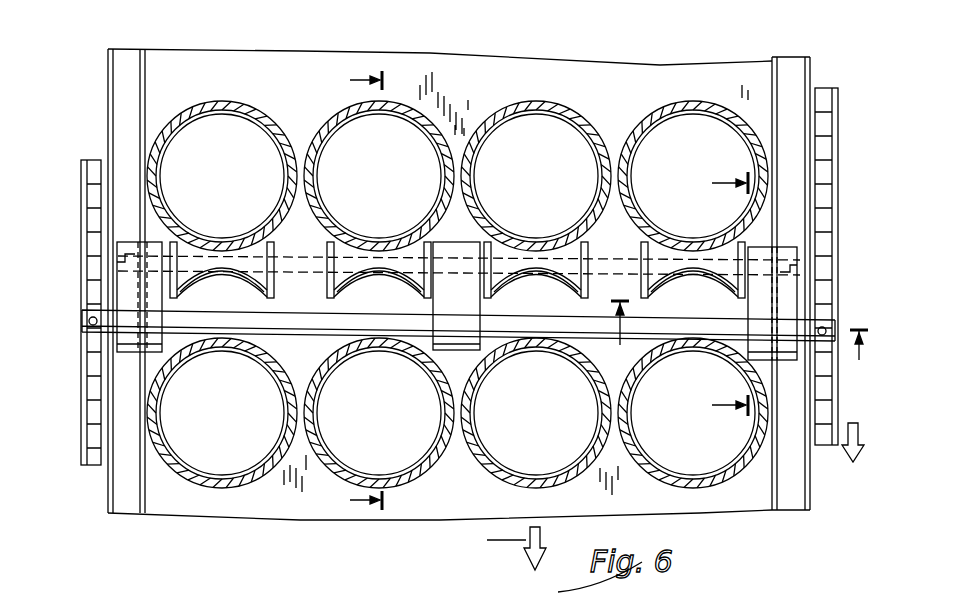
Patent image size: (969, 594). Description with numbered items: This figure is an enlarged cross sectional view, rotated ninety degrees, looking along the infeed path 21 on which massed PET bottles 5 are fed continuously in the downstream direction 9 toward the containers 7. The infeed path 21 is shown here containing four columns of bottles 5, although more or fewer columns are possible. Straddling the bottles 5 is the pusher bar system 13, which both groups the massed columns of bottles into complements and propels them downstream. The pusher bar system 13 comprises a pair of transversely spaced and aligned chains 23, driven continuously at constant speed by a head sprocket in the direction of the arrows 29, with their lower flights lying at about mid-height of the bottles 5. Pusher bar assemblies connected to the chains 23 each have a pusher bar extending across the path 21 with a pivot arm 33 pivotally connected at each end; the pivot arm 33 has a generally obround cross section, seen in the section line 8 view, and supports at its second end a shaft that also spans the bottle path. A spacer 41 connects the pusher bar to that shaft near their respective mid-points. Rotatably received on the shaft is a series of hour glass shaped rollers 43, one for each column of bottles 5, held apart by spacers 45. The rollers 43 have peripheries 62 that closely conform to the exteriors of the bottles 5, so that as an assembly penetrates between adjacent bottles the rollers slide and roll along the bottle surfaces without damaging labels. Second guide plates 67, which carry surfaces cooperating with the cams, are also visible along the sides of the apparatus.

The infeed path 21 is at (489, 50).
The PET bottles 5 is at (546, 185).
The containers 7 is at (353, 291).
The section line 8 is at (720, 294).
The downstream direction 9 is at (668, 435).
The pusher bar system 13 is at (845, 160).
The chains 23 is at (92, 422).
The chain drive direction arrows 29 is at (852, 464).
The pivot arm 33 is at (792, 301).
The spacer 41 is at (458, 303).
The hour glass rollers 43 is at (205, 285).
The spacers 45 is at (302, 252).
The peripheries 62 is at (330, 292).
The second guide plates 67 is at (141, 500).